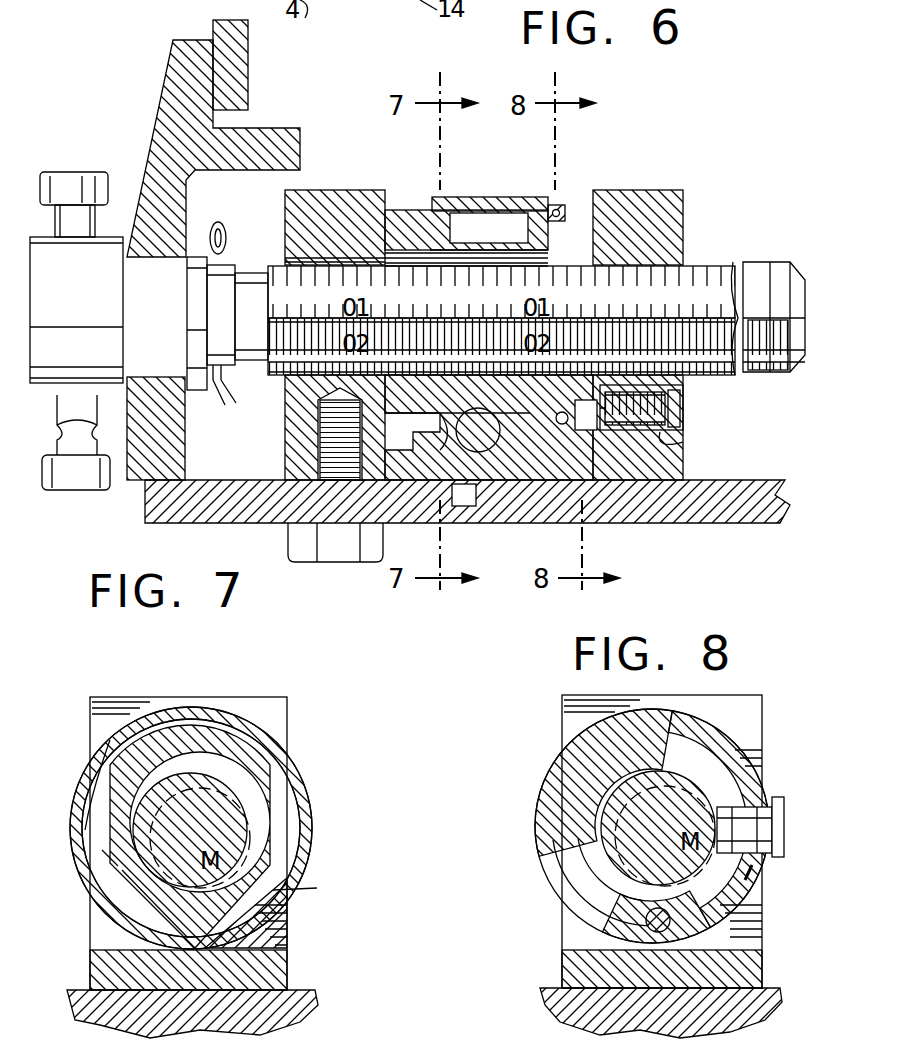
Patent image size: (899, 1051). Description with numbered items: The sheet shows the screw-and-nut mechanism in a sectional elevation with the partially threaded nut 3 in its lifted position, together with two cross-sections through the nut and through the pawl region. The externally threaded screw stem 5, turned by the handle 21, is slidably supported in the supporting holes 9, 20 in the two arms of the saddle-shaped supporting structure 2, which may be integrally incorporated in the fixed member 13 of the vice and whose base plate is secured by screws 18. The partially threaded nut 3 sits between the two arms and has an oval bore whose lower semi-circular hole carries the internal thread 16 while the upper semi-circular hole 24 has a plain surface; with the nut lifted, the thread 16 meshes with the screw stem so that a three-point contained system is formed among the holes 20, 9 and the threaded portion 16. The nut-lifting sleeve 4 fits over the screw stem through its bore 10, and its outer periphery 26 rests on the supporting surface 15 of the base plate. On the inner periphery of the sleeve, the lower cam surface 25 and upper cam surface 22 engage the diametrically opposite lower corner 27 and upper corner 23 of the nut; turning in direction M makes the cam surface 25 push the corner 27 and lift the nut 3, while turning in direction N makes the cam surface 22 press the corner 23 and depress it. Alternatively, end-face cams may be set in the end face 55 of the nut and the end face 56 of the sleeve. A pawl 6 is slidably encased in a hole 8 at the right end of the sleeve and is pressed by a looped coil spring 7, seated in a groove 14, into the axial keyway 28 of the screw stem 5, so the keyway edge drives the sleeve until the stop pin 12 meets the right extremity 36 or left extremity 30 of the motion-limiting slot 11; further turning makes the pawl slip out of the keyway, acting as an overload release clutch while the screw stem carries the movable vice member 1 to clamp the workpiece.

In FIG. 6, the movable vice member 1 is at (282, 145).
In FIG. 6, the supporting structure 2 is at (343, 198).
In FIG. 6, the partially threaded nut 3 is at (400, 207).
In FIG. 7, the partially threaded nut 3 is at (280, 853).
In FIG. 6, the nut-lifting sleeve 4 is at (470, 197).
In FIG. 7, the nut-lifting sleeve 4 is at (302, 805).
In FIG. 8, the nut-lifting sleeve 4 is at (558, 790).
In FIG. 6, the screw stem 5 is at (752, 373).
In FIG. 7, the screw stem 5 is at (191, 830).
In FIG. 8, the screw stem 5 is at (643, 770).
In FIG. 8, the pawl 6 is at (782, 840).
In FIG. 6, the looped coil spring 7 is at (558, 205).
In FIG. 8, the looped coil spring 7 is at (767, 870).
In FIG. 8, the hole 8 is at (764, 797).
In FIG. 6, the supporting hole 9 is at (677, 272).
In FIG. 6, the bore 10 is at (530, 358).
In FIG. 8, the bore 10 is at (627, 790).
In FIG. 6, the motion-limiting slot 11 is at (597, 360).
In FIG. 8, the motion-limiting slot 11 is at (583, 887).
In FIG. 6, the stop pin 12 is at (683, 442).
In FIG. 8, the stop pin 12 is at (662, 969).
In FIG. 6, the fixed member of the vice 13 is at (707, 507).
In FIG. 7, the fixed member of the vice 13 is at (293, 1007).
In FIG. 8, the fixed member of the vice 13 is at (762, 1002).
In FIG. 6, the groove 14 is at (552, 420).
In FIG. 8, the groove 14 is at (760, 925).
In FIG. 6, the supporting surface 15 is at (440, 456).
In FIG. 7, the supporting surface 15 is at (110, 953).
In FIG. 6, the internal thread 16 is at (440, 386).
In FIG. 7, the internal thread 16 is at (287, 900).
In FIG. 6, the screws 18 is at (335, 552).
In FIG. 6, the supporting hole 20 is at (277, 263).
In FIG. 6, the handle 21 is at (70, 475).
In FIG. 6, the upper cam surface 22 is at (450, 268).
In FIG. 7, the upper cam surface 22 is at (145, 735).
In FIG. 6, the upper corner 23 is at (510, 198).
In FIG. 7, the upper corner 23 is at (188, 717).
In FIG. 6, the semi-circular hole 24 is at (388, 254).
In FIG. 7, the semi-circular hole 24 is at (240, 783).
In FIG. 6, the lower cam surface 25 is at (497, 400).
In FIG. 7, the lower cam surface 25 is at (233, 960).
In FIG. 6, the outer periphery 26 is at (437, 450).
In FIG. 7, the outer periphery 26 is at (85, 775).
In FIG. 8, the outer periphery 26 is at (555, 790).
In FIG. 6, the lower corner 27 is at (476, 412).
In FIG. 7, the lower corner 27 is at (187, 940).
In FIG. 7, the axial keyway 28 is at (190, 846).
In FIG. 8, the axial keyway 28 is at (662, 836).
In FIG. 8, the left extremity 30 is at (552, 835).
In FIG. 8, the right extremity 36 is at (675, 947).
In FIG. 6, the end face 55 is at (546, 232).
In FIG. 6, the end face 56 is at (505, 230).